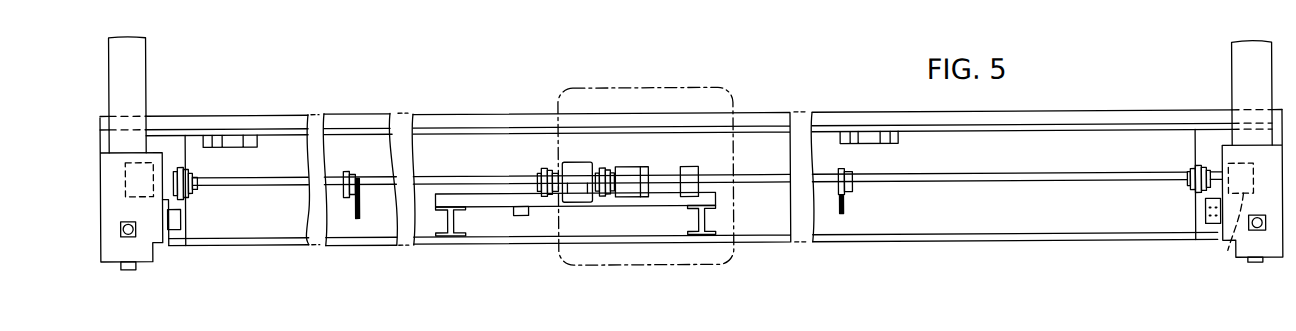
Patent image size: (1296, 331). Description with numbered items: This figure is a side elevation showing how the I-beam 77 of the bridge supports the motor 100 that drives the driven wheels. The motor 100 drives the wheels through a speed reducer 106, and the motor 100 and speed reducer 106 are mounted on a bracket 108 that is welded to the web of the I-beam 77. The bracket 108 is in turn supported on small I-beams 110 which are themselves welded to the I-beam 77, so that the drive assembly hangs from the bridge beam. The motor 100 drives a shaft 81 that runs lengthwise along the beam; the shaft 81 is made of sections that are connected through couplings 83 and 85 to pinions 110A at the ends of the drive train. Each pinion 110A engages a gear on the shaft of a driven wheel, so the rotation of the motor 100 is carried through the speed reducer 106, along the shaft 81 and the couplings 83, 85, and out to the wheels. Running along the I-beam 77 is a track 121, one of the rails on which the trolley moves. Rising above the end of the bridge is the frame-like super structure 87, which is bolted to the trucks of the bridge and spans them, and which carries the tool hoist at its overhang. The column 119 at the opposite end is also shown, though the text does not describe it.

The left end column 119 is at (138, 65).
The frame-like super structure 87 is at (1227, 69).
The track 121 is at (873, 122).
The I-beam 77 is at (515, 235).
The shaft 81 is at (753, 178).
The coupling 85 is at (187, 168).
The coupling 83 is at (1192, 171).
The speed reducer 106 is at (576, 165).
The motor 100 is at (668, 172).
The bracket 108 is at (715, 200).
The small I-beams 110 is at (455, 238).
The pinion 110A is at (1223, 262).